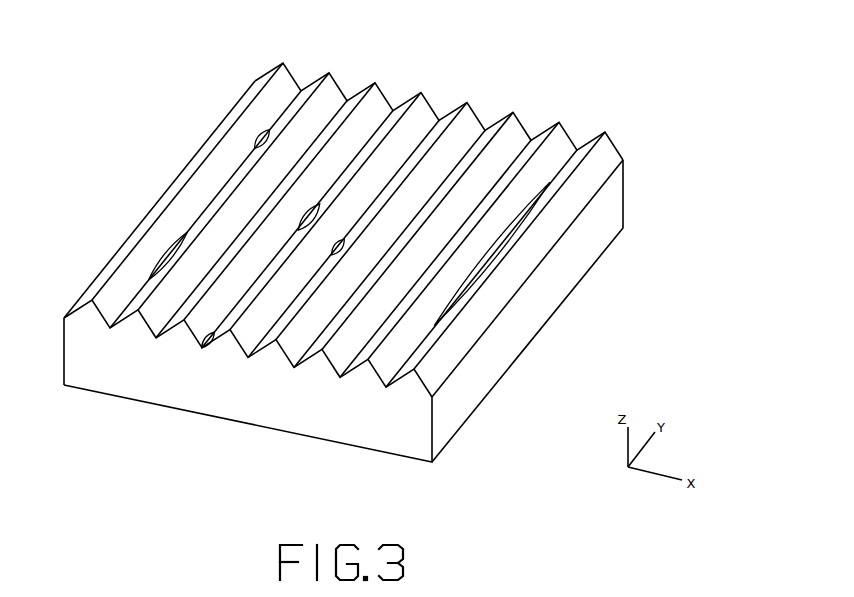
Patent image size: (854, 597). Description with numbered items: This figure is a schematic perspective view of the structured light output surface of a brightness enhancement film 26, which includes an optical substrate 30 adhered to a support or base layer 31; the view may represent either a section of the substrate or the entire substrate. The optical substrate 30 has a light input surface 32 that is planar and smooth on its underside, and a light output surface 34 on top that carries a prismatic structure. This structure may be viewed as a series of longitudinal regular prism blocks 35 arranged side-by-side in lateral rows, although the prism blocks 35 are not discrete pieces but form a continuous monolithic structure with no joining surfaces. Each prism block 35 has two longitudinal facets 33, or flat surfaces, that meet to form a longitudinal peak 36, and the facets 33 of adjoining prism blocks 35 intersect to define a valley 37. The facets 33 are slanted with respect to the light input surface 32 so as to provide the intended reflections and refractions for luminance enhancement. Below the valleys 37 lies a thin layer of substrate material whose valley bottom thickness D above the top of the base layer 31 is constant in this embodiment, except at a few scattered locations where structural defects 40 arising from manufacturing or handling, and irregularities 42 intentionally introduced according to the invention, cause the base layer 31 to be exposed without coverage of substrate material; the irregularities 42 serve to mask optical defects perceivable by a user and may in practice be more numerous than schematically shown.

The brightness enhancement film 26 is at (516, 82).
The optical substrate 30 is at (603, 194).
The base layer 31 is at (606, 230).
The light input surface 32 is at (267, 368).
The longitudinal facets 33 is at (512, 135).
The light output surface 34 is at (387, 177).
The prism blocks 35 is at (572, 128).
The longitudinal peak 36 is at (309, 87).
The valley 37 is at (383, 390).
The structural defects 40 is at (258, 140).
The irregularities 42 is at (163, 252).
The valley bottom thickness D is at (152, 343).